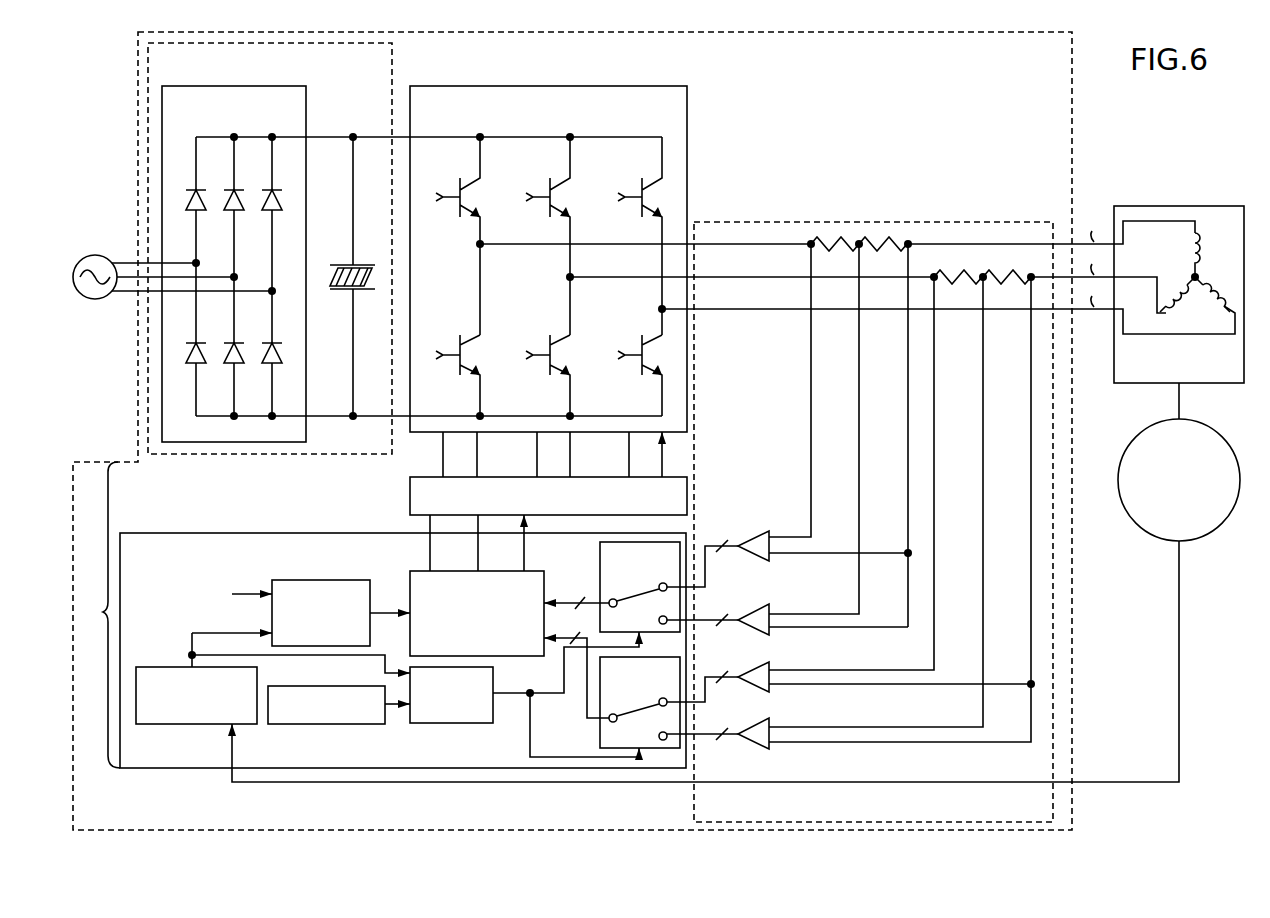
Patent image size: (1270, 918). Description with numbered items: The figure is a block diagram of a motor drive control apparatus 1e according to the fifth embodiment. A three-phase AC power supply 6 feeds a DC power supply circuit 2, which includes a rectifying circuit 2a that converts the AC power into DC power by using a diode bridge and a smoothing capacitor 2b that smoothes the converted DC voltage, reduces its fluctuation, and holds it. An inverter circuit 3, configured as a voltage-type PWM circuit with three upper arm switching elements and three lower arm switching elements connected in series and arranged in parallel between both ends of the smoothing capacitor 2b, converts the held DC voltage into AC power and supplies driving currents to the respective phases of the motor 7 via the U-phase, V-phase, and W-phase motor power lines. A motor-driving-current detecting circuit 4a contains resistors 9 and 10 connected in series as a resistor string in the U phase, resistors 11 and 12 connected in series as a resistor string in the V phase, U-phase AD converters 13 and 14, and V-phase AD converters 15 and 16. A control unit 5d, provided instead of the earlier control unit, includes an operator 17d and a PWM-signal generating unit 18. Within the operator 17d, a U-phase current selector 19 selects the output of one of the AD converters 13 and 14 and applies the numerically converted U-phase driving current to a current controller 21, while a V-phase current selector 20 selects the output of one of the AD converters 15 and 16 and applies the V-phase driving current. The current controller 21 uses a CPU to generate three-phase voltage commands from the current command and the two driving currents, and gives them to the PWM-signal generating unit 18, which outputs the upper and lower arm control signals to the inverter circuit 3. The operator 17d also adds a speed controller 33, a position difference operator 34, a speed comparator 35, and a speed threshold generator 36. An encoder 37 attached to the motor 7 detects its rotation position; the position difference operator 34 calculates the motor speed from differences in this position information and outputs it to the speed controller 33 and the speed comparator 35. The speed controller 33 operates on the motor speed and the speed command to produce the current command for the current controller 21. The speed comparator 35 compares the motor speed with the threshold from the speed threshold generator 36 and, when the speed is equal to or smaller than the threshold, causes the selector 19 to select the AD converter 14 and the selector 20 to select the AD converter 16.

The motor drive control apparatus 1e is at (107, 462).
The DC power supply circuit 2 is at (392, 59).
The rectifying circuit 2a is at (307, 104).
The smoothing capacitor 2b is at (339, 263).
The inverter circuit 3 is at (689, 103).
The motor-driving-current detecting circuit 4a is at (689, 803).
The control unit 5d is at (101, 615).
The power supply 6 is at (101, 254).
The motor 7 is at (1200, 206).
The resistor for U-phase current detection 9 is at (884, 236).
The resistor for U-phase current detection 10 is at (836, 236).
The resistor for V-phase current detection 11 is at (1008, 269).
The resistor for V-phase current detection 12 is at (960, 269).
The U-phase AD converter 13 is at (772, 606).
The U-phase AD converter 14 is at (745, 532).
The V-phase AD converter 15 is at (772, 721).
The V-phase AD converter 16 is at (772, 665).
The operator 17d is at (132, 534).
The PWM-signal generating unit 18 is at (410, 500).
The U-phase current selector 19 is at (599, 556).
The V-phase current selector 20 is at (599, 740).
The current controller 21 is at (505, 657).
The speed controller 33 is at (310, 580).
The position difference operator 34 is at (160, 667).
The speed comparator 35 is at (455, 724).
The speed threshold generator 36 is at (330, 686).
The encoder 37 is at (1202, 422).